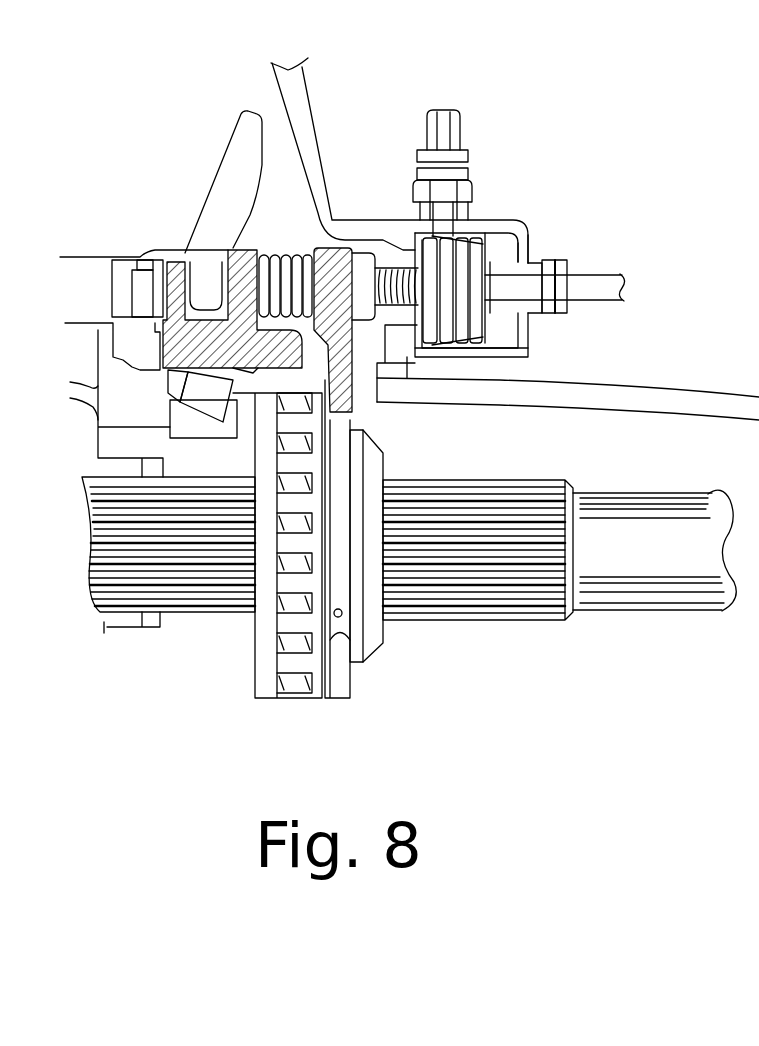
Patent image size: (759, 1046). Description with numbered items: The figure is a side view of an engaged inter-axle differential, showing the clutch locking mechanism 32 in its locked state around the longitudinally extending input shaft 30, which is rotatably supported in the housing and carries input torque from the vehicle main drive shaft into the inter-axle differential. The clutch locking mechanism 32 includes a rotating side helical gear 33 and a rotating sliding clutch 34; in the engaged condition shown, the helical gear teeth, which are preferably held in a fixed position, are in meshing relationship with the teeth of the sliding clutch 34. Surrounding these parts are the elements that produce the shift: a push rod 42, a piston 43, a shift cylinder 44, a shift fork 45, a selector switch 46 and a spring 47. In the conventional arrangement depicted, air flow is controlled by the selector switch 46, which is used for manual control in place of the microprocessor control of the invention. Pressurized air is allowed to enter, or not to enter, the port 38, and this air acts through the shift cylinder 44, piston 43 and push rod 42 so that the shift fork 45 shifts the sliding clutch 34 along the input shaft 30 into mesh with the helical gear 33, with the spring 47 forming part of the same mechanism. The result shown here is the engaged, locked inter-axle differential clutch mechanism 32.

The input shaft 30 is at (643, 570).
The clutch locking mechanism 32 is at (581, 102).
The rotating side helical gear 33 is at (262, 676).
The rotating sliding clutch 34 is at (320, 683).
The port 38 is at (610, 305).
The push rod 42 is at (377, 243).
The piston 43 is at (528, 220).
The shift cylinder 44 is at (533, 246).
The shift fork 45 is at (340, 262).
The selector switch 46 is at (462, 150).
The spring 47 is at (272, 253).